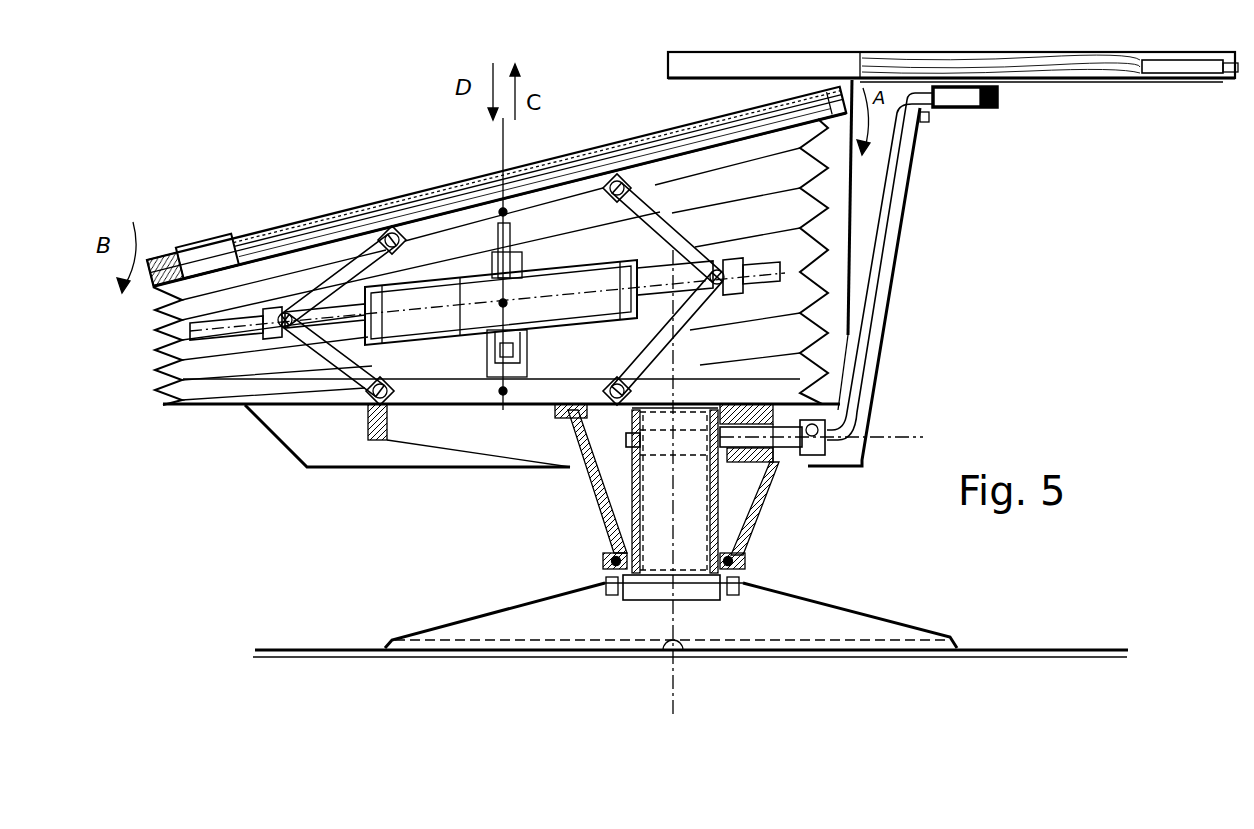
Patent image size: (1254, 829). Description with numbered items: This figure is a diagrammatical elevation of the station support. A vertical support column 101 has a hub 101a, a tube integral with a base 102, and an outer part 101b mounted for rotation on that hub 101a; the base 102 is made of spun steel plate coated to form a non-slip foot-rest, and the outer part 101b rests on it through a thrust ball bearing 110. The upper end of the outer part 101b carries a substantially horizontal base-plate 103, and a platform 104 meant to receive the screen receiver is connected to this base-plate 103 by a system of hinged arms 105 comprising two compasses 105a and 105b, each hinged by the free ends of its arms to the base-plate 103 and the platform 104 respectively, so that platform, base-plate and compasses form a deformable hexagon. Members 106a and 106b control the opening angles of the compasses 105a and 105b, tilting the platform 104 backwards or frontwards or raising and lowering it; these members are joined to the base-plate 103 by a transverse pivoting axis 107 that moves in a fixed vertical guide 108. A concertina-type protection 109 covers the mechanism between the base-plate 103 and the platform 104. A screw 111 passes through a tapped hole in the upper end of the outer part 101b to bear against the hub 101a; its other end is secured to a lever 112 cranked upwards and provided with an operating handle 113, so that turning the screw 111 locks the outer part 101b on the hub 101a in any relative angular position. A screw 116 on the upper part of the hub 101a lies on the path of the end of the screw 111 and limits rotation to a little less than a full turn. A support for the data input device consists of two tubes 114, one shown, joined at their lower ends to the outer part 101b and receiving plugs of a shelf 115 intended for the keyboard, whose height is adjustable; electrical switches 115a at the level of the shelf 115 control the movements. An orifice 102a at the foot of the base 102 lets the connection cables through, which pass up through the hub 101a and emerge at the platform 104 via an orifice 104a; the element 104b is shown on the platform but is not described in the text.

The vertical support column 101 is at (545, 560).
The hub 101a is at (630, 513).
The outer part of the column 101b is at (760, 522).
The base 102 is at (857, 610).
The orifice 102a is at (672, 628).
The base-plate 103 is at (430, 392).
The platform 104 is at (580, 163).
The orifice 104a is at (200, 258).
The board surface layer 104b is at (327, 215).
The system of hinged arms 105 is at (152, 384).
The compass 105a is at (333, 350).
The compass 105b is at (686, 249).
The member for controlling the opening angle 106a is at (376, 304).
The member for controlling the opening angle 106b is at (622, 287).
The transverse pivoting axis 107 is at (508, 303).
The fixed vertical guide 108 is at (514, 357).
The concertina-type protection 109 is at (845, 293).
The thrust ball bearing 110 is at (745, 563).
The screw 111 is at (787, 447).
The lever 112 is at (856, 370).
The operating handle 113 is at (998, 101).
The tube 114 is at (878, 214).
The shelf 115 is at (1074, 62).
The electrical switches 115a is at (1195, 72).
The screw 116 is at (625, 447).